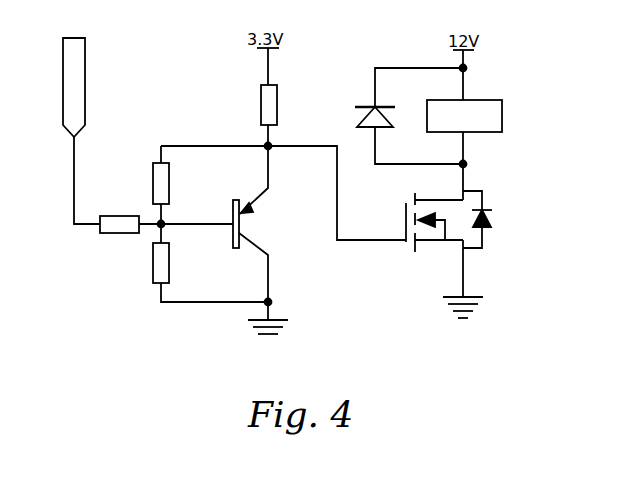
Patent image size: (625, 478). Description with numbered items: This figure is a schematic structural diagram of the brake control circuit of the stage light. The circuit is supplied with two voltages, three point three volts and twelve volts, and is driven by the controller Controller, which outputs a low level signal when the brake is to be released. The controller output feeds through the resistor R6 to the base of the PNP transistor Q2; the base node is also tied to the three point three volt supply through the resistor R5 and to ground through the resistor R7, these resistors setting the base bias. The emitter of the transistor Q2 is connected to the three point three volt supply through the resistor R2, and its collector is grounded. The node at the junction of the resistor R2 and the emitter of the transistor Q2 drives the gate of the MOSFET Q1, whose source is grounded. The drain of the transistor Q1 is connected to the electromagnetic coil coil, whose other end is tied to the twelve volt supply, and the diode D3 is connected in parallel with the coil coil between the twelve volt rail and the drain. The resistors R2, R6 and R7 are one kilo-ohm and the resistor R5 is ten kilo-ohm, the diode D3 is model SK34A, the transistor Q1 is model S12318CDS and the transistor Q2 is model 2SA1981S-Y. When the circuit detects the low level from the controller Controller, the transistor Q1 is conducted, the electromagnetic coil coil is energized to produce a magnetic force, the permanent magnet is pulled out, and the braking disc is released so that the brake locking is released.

The resistor R2 is at (281, 105).
The resistor R5 is at (174, 183).
The resistor R6 is at (119, 211).
The resistor R7 is at (174, 263).
The transistor Q1 is at (433, 221).
The transistor Q2 is at (262, 224).
The diode D3 is at (369, 103).
The controller Controller is at (78, 87).
The electromagnetic coil is at (464, 116).